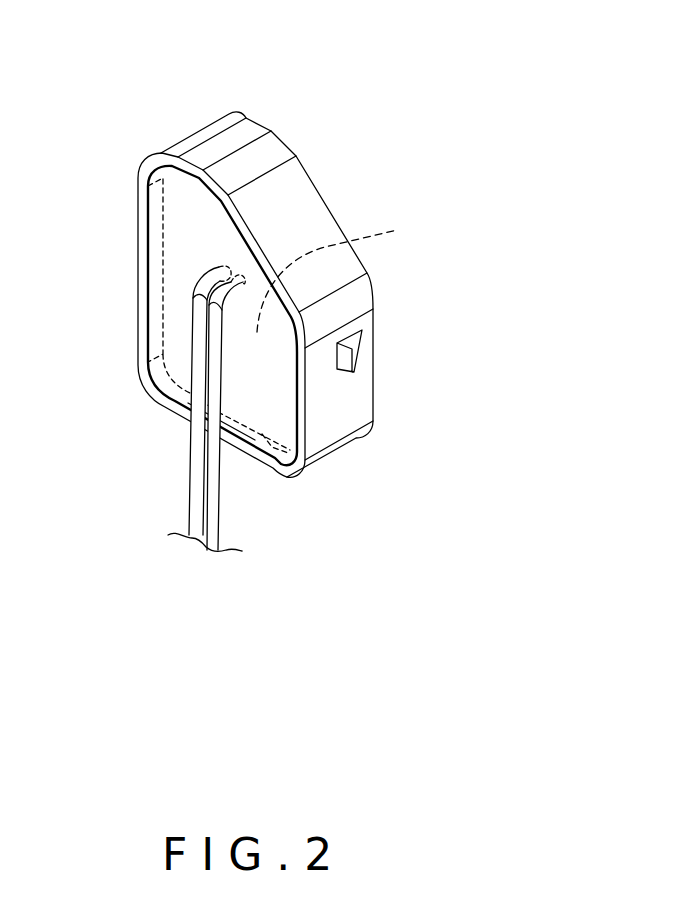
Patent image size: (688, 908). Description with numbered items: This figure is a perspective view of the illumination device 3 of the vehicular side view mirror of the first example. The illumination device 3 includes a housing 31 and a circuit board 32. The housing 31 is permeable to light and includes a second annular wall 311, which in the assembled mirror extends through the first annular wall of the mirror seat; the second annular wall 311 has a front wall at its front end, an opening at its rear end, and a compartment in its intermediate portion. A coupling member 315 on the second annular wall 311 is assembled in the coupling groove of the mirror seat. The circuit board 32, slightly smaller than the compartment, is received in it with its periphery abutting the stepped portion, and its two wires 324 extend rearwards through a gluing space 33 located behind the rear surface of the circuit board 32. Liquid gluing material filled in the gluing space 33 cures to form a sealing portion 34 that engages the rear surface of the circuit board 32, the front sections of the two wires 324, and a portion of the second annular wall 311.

The illumination device 3 is at (279, 301).
The housing 31 is at (284, 298).
The second annular wall 311 is at (290, 210).
The coupling member 315 is at (357, 352).
The circuit board 32 is at (266, 466).
The wires 324 is at (184, 481).
The gluing space 33 is at (343, 277).
The sealing portion 34 is at (173, 232).